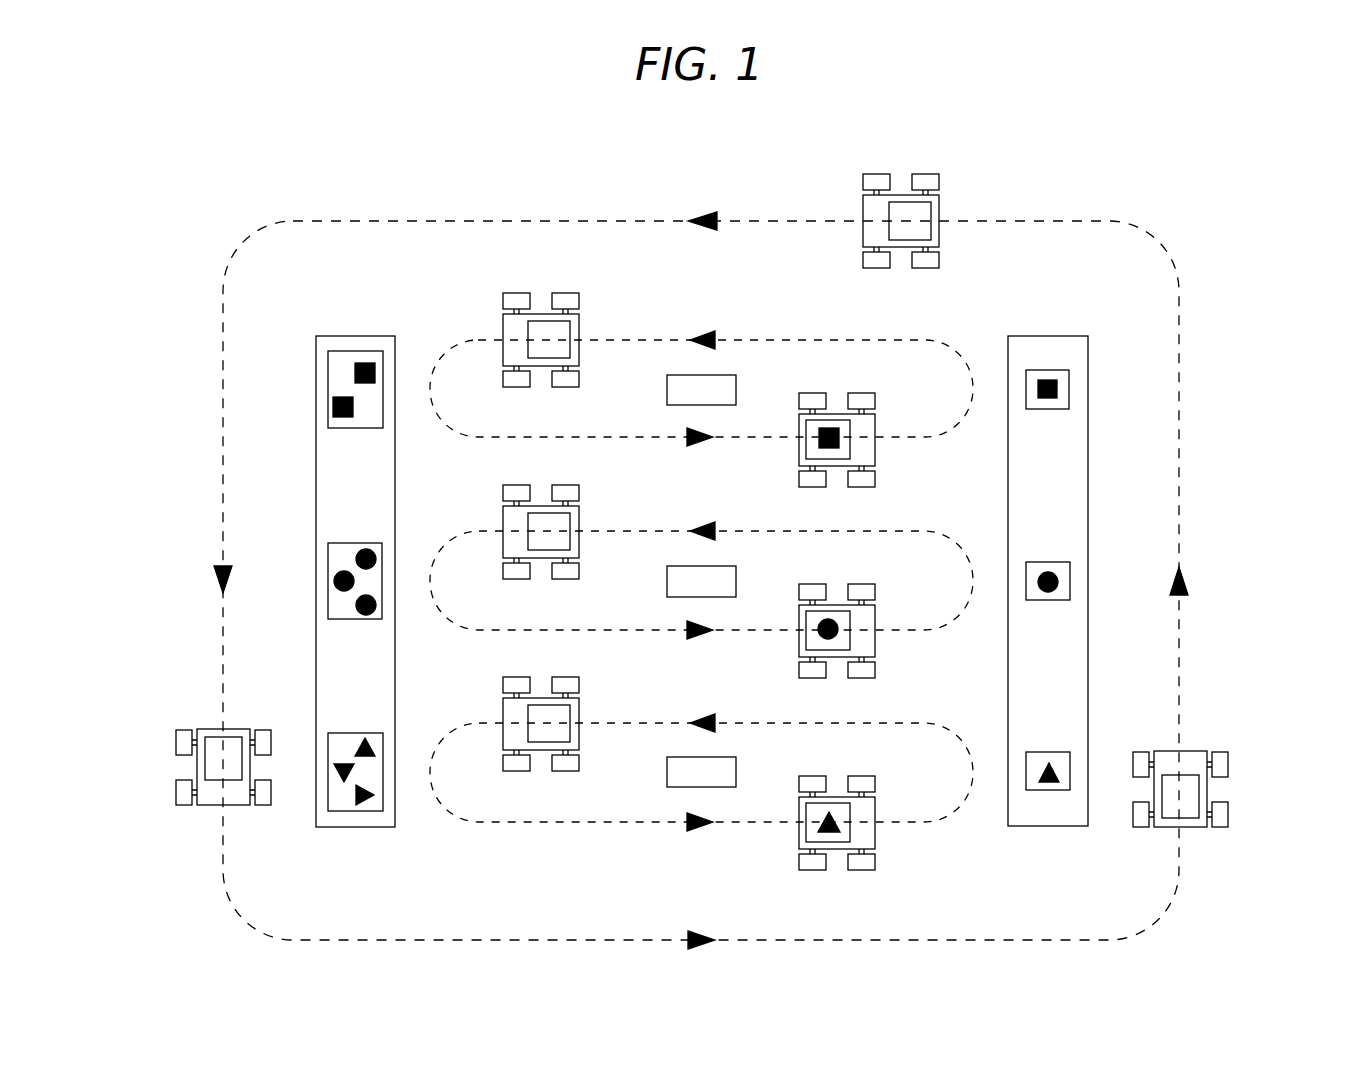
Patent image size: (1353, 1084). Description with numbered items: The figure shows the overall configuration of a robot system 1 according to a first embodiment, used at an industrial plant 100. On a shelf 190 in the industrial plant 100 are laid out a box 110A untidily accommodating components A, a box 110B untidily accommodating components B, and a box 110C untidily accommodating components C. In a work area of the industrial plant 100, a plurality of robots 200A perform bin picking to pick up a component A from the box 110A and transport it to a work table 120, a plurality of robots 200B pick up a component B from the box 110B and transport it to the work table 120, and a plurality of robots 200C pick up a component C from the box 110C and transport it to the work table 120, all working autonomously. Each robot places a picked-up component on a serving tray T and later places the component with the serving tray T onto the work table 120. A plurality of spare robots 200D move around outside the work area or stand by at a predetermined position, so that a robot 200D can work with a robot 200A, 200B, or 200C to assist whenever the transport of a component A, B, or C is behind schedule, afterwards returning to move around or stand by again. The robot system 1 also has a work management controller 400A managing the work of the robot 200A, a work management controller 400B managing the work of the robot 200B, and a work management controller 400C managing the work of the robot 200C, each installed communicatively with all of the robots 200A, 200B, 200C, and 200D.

The industrial plant 100 is at (175, 142).
The robot system 1 is at (1192, 177).
The box 110A is at (328, 392).
The box 110B is at (328, 586).
The box 110C is at (355, 812).
The shelf 190 is at (332, 486).
The work table 120 is at (1060, 480).
The robot 200A is at (515, 330).
The robot 200B is at (515, 522).
The robot 200C is at (515, 713).
The robot 200D is at (903, 195).
The work management controller 400A is at (722, 390).
The work management controller 400B is at (722, 582).
The work management controller 400C is at (722, 773).
The serving tray T is at (545, 338).
The component A is at (365, 363).
The component B is at (365, 605).
The component C is at (363, 796).